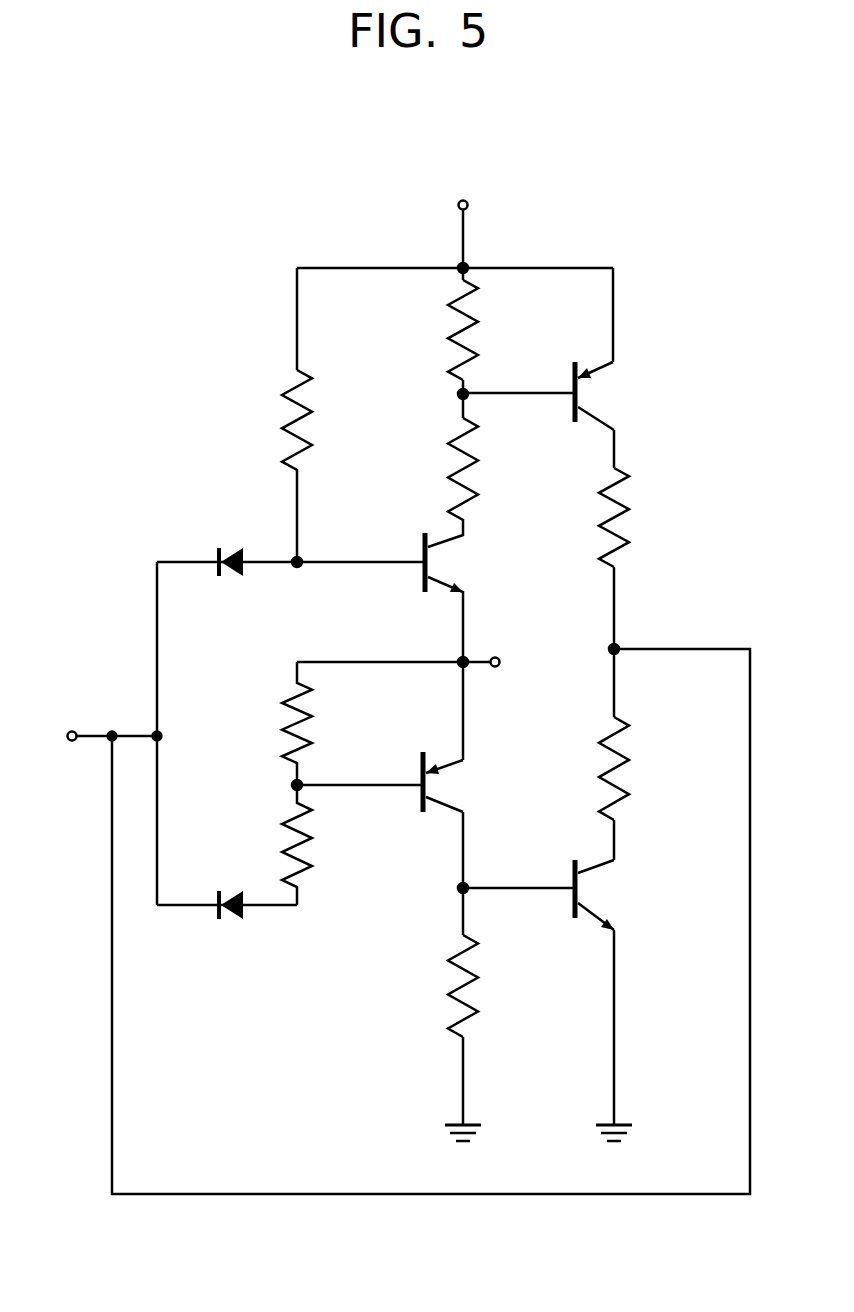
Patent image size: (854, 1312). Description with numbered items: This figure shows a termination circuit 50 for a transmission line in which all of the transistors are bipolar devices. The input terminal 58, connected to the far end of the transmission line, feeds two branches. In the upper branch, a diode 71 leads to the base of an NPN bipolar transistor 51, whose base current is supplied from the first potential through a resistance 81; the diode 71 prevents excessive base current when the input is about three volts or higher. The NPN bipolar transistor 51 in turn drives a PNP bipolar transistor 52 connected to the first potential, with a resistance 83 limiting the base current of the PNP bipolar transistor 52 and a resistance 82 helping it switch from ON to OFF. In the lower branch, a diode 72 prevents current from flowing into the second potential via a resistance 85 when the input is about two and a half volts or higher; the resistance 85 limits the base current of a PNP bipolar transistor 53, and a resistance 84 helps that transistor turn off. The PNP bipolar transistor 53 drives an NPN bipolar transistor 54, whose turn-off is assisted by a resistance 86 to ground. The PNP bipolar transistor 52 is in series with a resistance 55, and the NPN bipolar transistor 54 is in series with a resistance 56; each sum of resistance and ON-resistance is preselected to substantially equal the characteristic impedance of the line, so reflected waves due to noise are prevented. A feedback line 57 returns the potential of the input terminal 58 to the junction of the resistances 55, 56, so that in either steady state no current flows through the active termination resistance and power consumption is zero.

The termination circuit 50 is at (163, 370).
The NPN bipolar transistor 51 is at (450, 563).
The PNP bipolar transistor 52 is at (595, 402).
The PNP bipolar transistor 53 is at (448, 787).
The NPN bipolar transistor 54 is at (592, 892).
The resistance 55 is at (623, 503).
The resistance 56 is at (620, 785).
The feedback line 57 is at (260, 1192).
The input terminal 58 is at (68, 728).
The diode 71 is at (233, 550).
The diode 72 is at (237, 893).
The resistance 81 is at (300, 407).
The resistance 82 is at (473, 325).
The resistance 83 is at (472, 490).
The resistance 84 is at (300, 747).
The resistance 85 is at (300, 868).
The resistance 86 is at (468, 990).